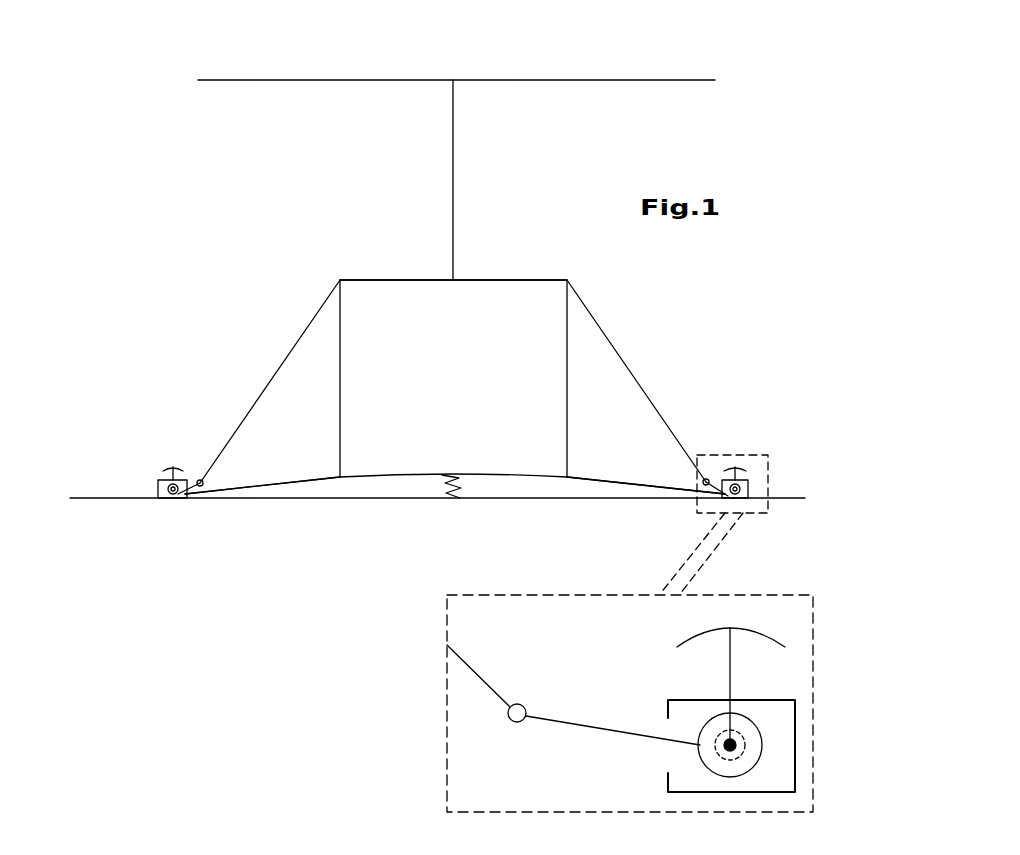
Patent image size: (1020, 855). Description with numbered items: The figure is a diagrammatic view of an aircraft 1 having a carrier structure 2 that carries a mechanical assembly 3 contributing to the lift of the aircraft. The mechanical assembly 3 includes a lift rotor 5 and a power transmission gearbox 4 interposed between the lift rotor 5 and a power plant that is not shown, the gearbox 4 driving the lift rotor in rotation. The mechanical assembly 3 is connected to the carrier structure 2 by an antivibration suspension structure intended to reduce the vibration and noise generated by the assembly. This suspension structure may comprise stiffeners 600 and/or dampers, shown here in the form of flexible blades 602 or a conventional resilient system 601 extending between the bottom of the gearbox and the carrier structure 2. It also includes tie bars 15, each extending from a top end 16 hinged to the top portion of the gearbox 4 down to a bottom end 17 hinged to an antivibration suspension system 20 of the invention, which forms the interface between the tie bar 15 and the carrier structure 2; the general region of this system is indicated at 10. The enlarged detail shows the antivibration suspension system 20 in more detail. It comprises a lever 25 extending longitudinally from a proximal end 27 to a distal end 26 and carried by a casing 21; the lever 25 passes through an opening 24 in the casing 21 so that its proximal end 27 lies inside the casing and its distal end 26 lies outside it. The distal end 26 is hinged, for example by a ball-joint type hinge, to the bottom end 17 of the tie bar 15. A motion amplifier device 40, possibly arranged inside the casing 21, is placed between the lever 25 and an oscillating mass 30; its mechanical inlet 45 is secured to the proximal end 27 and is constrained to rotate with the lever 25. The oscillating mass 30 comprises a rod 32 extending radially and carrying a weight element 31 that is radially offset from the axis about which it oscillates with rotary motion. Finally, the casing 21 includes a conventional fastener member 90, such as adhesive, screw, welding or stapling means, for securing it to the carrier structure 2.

The aircraft 1 is at (776, 63).
The carrier structure 2 is at (84, 498).
The mechanical assembly 3 is at (216, 188).
The power transmission gearbox 4 is at (496, 268).
The lift rotor 5 is at (537, 62).
The support arrangement 10 is at (132, 425).
The tie bar 15 is at (281, 365).
The top end 16 is at (340, 283).
The bottom end 17 is at (200, 480).
The antivibration suspension system 20 is at (118, 484).
The casing 21 is at (797, 792).
The opening 24 is at (652, 760).
The lever 25 is at (194, 496).
The distal end 26 is at (515, 725).
The proximal end 27 is at (688, 738).
The oscillating mass 30 is at (765, 622).
The weight element 31 is at (692, 650).
The rod 32 is at (728, 660).
The motion amplifier device 40 is at (770, 765).
The mechanical inlet 45 is at (727, 762).
The fastener member 90 is at (172, 499).
The stiffeners 600 is at (455, 480).
The resilient system 601 is at (463, 516).
The flexible blades 602 is at (285, 478).